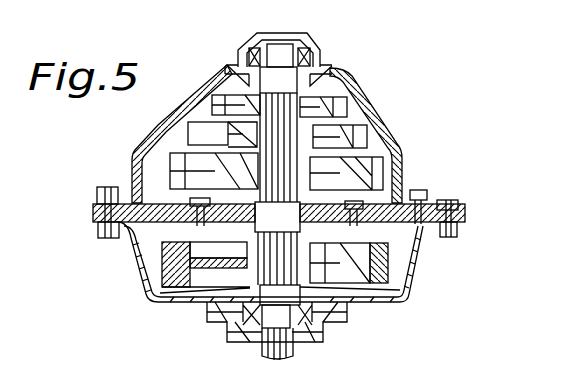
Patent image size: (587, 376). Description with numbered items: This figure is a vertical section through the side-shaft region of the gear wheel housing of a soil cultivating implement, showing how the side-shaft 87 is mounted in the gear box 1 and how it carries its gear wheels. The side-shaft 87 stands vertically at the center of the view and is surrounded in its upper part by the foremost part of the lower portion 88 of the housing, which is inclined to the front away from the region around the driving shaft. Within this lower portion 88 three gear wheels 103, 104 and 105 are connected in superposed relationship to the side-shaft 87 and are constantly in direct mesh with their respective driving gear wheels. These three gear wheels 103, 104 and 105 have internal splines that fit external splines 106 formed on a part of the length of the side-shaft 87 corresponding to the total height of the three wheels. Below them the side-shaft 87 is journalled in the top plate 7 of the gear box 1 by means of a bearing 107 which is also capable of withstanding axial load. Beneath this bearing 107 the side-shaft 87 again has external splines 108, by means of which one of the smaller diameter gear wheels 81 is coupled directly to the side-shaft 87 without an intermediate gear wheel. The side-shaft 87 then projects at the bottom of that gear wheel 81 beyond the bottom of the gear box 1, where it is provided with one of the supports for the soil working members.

The gear box 1 is at (128, 253).
The top plate 7 is at (457, 220).
The gear wheel 81 is at (158, 289).
The side-shaft 87 is at (279, 72).
The lower portion 88 is at (193, 82).
The gear wheel 103 is at (345, 107).
The gear wheel 104 is at (363, 132).
The gear wheel 105 is at (380, 167).
The external splines 106 is at (273, 133).
The bearing 107 is at (345, 237).
The external splines 108 is at (268, 262).